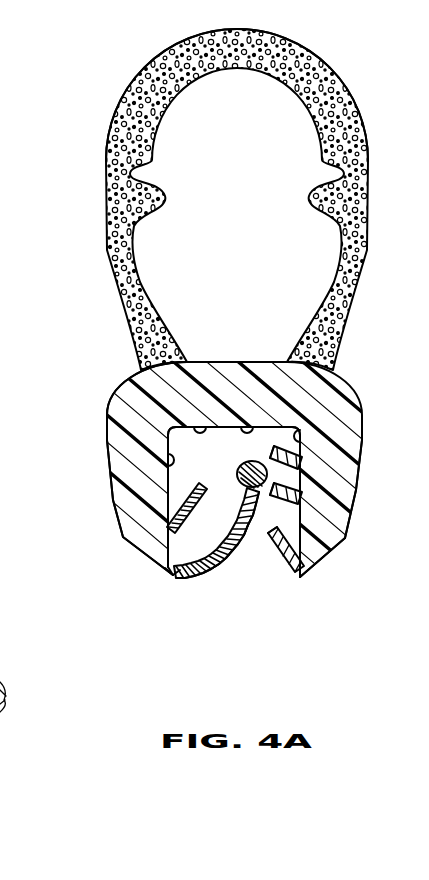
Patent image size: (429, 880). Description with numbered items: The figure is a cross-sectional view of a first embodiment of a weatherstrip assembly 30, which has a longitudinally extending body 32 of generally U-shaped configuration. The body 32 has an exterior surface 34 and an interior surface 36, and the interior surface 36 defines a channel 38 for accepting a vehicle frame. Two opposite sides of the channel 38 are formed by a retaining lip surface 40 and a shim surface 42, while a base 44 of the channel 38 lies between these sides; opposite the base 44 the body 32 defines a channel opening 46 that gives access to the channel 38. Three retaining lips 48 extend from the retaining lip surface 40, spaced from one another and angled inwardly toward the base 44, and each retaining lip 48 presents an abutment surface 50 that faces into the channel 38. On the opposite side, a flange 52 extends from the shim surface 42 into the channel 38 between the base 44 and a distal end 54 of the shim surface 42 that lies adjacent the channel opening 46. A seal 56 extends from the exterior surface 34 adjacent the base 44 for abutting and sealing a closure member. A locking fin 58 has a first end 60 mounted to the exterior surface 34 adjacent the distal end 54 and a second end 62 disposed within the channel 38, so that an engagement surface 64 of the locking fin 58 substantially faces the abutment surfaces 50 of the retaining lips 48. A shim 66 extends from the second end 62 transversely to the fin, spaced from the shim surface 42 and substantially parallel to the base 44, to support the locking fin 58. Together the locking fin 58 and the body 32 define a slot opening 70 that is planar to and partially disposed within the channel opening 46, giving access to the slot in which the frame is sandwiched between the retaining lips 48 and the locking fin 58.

The weatherstrip assembly 30 is at (124, 88).
The body 32 is at (130, 478).
The exterior surface 34 is at (107, 438).
The interior surface 36 is at (290, 430).
The channel 38 is at (205, 420).
The retaining lip surface 40 is at (342, 526).
The shim surface 42 is at (164, 464).
The base 44 is at (250, 420).
The channel opening 46 is at (298, 582).
The retaining lips 48 is at (285, 485).
The abutment surface 50 is at (270, 452).
The flange 52 is at (125, 510).
The distal end 54 is at (173, 574).
The seal 56 is at (300, 63).
The locking fin 58 is at (226, 553).
The first end 60 is at (182, 562).
The second end 62 is at (240, 488).
The engagement surface 64 is at (256, 522).
The shim 66 is at (250, 462).
The slot opening 70 is at (213, 572).